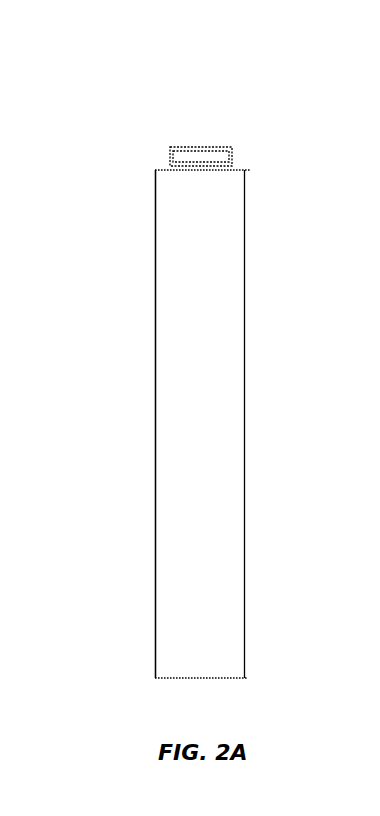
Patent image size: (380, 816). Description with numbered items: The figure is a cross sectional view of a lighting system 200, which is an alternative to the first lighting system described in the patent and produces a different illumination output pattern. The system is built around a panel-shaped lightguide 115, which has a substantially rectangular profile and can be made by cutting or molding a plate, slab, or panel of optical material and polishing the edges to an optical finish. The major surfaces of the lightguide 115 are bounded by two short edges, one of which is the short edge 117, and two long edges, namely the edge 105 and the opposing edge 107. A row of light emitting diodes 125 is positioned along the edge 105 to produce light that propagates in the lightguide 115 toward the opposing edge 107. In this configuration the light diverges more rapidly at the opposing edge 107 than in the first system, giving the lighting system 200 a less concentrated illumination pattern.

The lighting system 200 is at (205, 68).
The light emitting diodes 125 is at (204, 136).
The edge 105 is at (195, 174).
The short edge 117 is at (192, 355).
The lightguide 115 is at (212, 464).
The opposing edge 107 is at (215, 676).